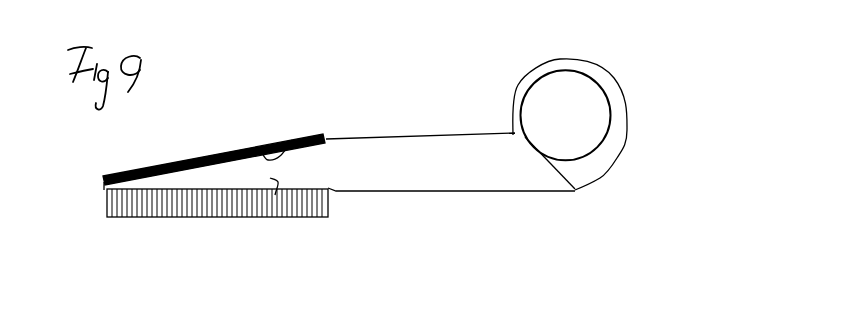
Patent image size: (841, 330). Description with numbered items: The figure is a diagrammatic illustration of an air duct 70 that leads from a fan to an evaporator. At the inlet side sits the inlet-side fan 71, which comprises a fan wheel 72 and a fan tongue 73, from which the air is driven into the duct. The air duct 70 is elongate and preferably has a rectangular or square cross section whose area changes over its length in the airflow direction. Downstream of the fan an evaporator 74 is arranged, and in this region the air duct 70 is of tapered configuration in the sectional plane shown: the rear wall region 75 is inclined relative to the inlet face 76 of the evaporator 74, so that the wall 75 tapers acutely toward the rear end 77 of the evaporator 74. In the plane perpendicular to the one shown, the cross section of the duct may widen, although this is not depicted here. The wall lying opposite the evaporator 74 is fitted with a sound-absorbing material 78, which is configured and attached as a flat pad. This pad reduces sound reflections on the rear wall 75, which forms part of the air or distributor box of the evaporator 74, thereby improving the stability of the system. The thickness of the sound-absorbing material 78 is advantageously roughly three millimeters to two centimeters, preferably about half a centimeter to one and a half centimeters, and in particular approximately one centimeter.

The air duct 70 is at (447, 193).
The inlet-side fan 71 is at (618, 155).
The fan wheel 72 is at (620, 102).
The fan tongue 73 is at (525, 137).
The evaporator 74 is at (200, 220).
The rear wall region 75 is at (292, 140).
The inlet face 76 is at (275, 195).
The rear end 77 is at (104, 190).
The sound-absorbing material 78 is at (207, 128).